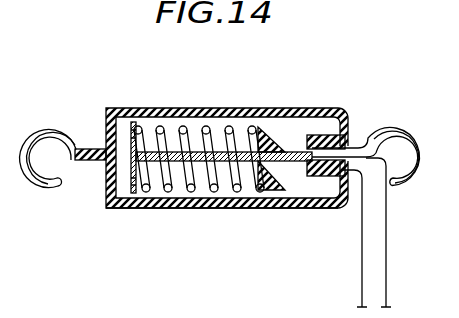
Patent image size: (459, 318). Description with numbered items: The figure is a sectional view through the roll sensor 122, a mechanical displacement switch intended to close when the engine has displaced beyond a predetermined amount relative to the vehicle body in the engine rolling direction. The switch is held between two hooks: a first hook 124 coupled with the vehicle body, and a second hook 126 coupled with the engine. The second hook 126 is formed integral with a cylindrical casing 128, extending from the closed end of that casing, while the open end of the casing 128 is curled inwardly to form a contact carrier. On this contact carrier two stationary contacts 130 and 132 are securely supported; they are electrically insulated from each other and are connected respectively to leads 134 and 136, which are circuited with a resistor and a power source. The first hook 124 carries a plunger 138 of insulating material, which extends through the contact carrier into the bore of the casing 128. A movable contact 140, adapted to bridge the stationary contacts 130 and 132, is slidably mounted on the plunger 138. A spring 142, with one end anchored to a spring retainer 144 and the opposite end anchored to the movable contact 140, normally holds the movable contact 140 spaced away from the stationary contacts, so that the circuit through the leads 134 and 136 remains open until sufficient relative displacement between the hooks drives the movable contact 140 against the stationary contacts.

The roll sensor 122 is at (293, 107).
The first hook 124 is at (405, 128).
The second hook 126 is at (50, 126).
The cylindrical casing 128 is at (123, 209).
The stationary contact 130 is at (326, 135).
The stationary contact 132 is at (330, 177).
The lead 134 is at (393, 247).
The lead 136 is at (361, 267).
The plunger 138 is at (198, 127).
The movable contact 140 is at (277, 190).
The spring 142 is at (216, 170).
The spring retainer 144 is at (133, 123).